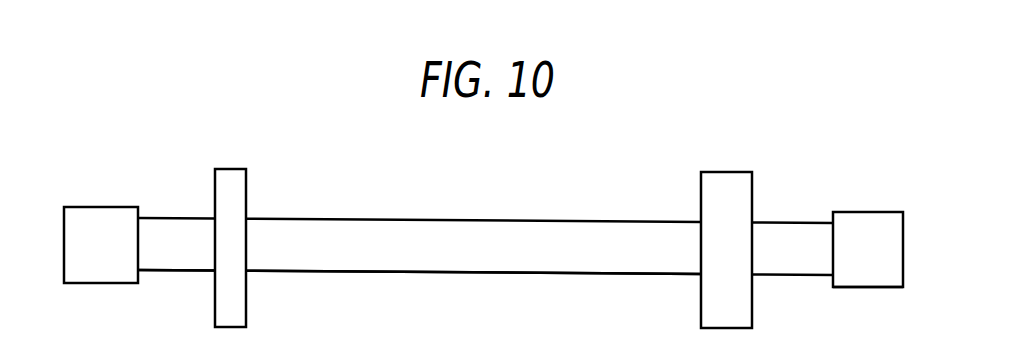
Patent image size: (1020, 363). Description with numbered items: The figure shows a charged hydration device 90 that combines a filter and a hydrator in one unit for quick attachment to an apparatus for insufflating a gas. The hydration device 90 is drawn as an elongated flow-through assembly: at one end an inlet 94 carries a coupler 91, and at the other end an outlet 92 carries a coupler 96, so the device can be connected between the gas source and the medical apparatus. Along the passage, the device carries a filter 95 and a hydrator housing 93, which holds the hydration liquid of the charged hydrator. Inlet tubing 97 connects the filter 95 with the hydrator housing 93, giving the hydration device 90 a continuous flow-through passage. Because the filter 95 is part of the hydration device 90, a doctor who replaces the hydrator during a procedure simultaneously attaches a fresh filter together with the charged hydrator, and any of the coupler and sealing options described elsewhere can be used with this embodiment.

The hydration device 90 is at (472, 213).
The coupler 91 is at (97, 207).
The outlet 92 is at (817, 222).
The hydrator housing 93 is at (740, 172).
The inlet 94 is at (178, 271).
The filter 95 is at (228, 178).
The coupler 96 is at (867, 287).
The inlet tubing 97 is at (462, 272).